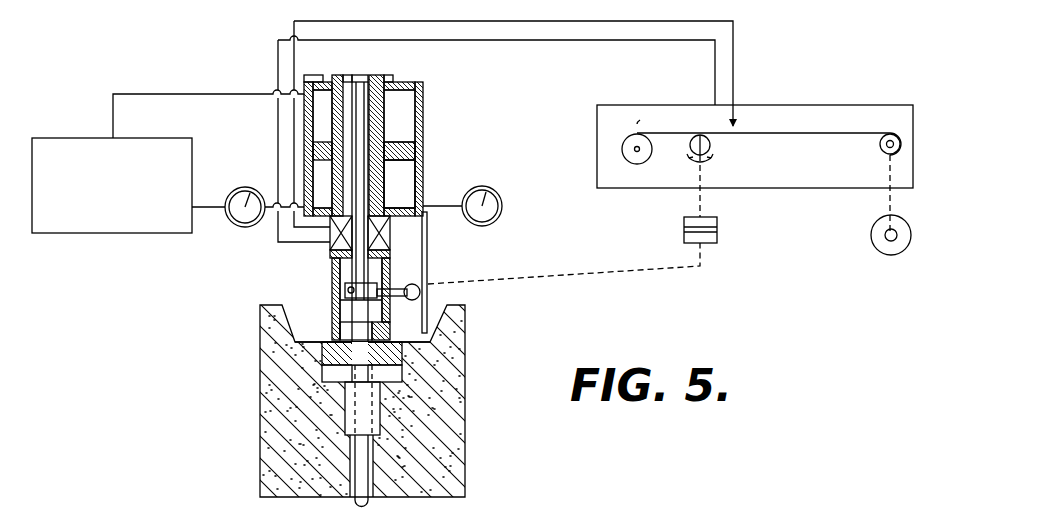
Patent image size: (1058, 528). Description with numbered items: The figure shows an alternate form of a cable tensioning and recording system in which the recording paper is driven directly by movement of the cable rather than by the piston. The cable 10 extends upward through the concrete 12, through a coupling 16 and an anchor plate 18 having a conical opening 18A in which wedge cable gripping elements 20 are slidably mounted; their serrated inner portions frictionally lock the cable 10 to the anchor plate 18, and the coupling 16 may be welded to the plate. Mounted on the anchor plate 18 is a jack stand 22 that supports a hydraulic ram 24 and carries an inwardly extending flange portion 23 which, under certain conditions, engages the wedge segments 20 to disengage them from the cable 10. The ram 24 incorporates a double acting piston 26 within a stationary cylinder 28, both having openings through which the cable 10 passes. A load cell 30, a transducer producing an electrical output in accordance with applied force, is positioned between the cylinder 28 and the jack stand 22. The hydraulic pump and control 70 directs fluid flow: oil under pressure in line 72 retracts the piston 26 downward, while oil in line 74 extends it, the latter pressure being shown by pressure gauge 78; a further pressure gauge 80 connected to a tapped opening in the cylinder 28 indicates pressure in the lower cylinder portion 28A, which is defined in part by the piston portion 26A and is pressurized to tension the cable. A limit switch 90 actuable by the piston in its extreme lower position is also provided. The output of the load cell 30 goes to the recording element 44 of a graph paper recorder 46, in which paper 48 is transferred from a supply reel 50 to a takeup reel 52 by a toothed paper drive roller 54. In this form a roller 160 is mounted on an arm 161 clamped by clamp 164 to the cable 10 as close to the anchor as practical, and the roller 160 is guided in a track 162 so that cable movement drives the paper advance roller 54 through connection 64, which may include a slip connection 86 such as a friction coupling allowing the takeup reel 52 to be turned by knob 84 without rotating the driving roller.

The cable 10 is at (362, 76).
The concrete 12 is at (457, 421).
The coupling 16 is at (352, 393).
The anchor plate 18 is at (363, 360).
The conical opening 18A is at (350, 378).
The wedge cable gripping elements 20 is at (445, 342).
The jack stand 22 is at (332, 266).
The inwardly extending flange portion 23 is at (347, 315).
The hydraulic ram 24 is at (430, 96).
The double acting piston 26 is at (393, 78).
The piston portion 26A is at (408, 147).
The stationary cylinder 28 is at (420, 184).
The lower cylinder portion 28A is at (400, 162).
The load cell 30 is at (388, 234).
The recording element 44 is at (738, 131).
The graph paper recorder 46 is at (677, 82).
The paper 48 is at (818, 133).
The supply reel 50 is at (645, 161).
The takeup reel 52 is at (883, 149).
The paper drive roller 54 is at (710, 143).
The connection 64 is at (623, 277).
The hydraulic pump and control 70 is at (120, 234).
The line 72 is at (213, 92).
The line 74 is at (217, 212).
The pressure gauge 78 is at (238, 187).
The pressure gauge 80 is at (503, 204).
The knob 84 is at (877, 253).
The slip connection 86 is at (720, 230).
The limit switch 90 is at (316, 78).
The roller 160 is at (419, 287).
The arm 161 is at (404, 286).
The track 162 is at (428, 298).
The clamp 164 is at (332, 308).